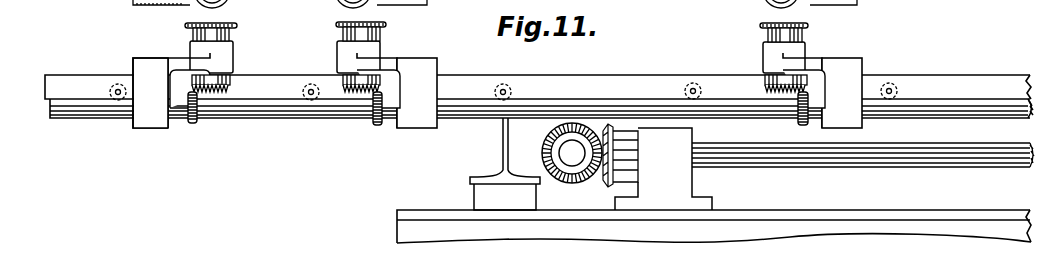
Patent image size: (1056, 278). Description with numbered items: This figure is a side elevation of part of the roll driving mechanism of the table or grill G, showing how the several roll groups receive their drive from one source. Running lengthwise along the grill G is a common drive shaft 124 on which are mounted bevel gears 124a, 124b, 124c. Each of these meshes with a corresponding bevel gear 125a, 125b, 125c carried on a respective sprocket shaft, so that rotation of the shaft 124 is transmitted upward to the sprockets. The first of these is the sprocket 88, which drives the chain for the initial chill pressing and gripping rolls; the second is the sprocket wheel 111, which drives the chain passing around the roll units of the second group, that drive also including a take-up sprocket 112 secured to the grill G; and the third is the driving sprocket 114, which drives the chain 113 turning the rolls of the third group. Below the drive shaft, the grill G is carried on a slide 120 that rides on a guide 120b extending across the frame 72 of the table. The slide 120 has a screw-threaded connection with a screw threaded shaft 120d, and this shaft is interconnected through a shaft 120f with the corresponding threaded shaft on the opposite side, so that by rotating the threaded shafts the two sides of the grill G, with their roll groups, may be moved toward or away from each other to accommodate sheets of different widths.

The grill G is at (581, 64).
The frame 72 is at (403, 228).
The sprocket 88 is at (192, 16).
The sprocket wheel 111 is at (337, 29).
The take-up sprocket 112 is at (245, 23).
The chain 113 is at (674, 22).
The driving sprocket 114 is at (755, 0).
The slide 120 is at (503, 154).
The guide 120b is at (477, 200).
The screw threaded shaft 120d is at (571, 152).
The shaft 120f is at (735, 156).
The common drive shaft 124 is at (297, 105).
The bevel gear 124a is at (178, 129).
The bevel gear 124b is at (376, 127).
The bevel gear 124c is at (800, 120).
The bevel gear 125a is at (217, 93).
The bevel gear 125b is at (357, 97).
The bevel gear 125c is at (768, 82).